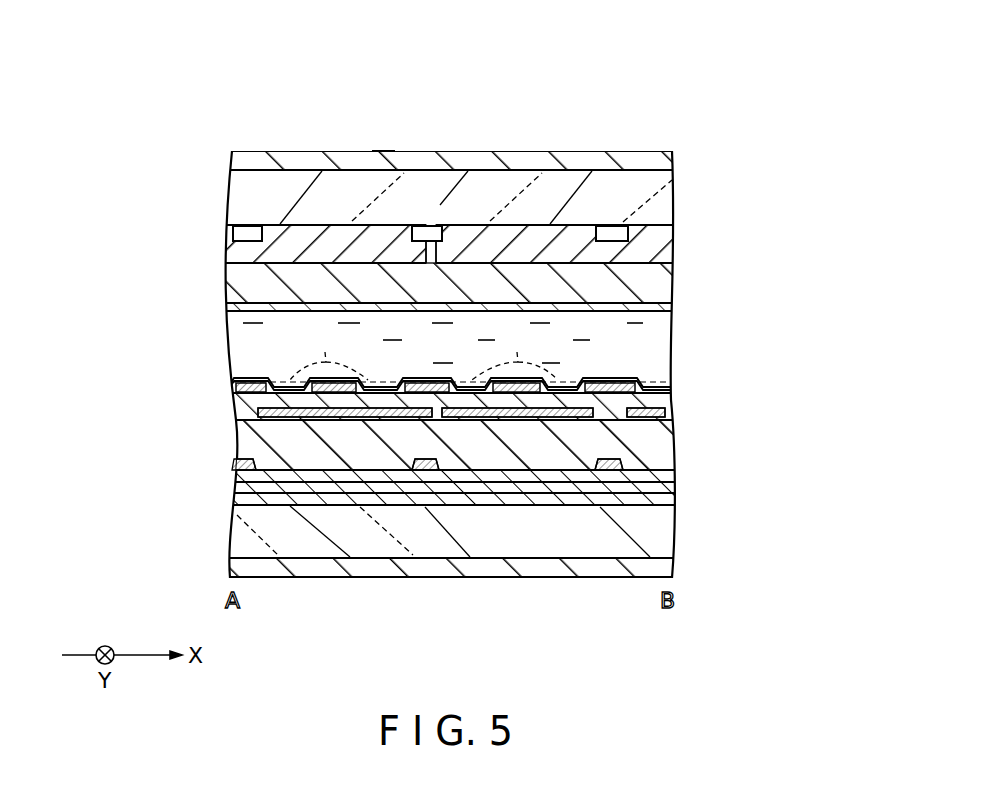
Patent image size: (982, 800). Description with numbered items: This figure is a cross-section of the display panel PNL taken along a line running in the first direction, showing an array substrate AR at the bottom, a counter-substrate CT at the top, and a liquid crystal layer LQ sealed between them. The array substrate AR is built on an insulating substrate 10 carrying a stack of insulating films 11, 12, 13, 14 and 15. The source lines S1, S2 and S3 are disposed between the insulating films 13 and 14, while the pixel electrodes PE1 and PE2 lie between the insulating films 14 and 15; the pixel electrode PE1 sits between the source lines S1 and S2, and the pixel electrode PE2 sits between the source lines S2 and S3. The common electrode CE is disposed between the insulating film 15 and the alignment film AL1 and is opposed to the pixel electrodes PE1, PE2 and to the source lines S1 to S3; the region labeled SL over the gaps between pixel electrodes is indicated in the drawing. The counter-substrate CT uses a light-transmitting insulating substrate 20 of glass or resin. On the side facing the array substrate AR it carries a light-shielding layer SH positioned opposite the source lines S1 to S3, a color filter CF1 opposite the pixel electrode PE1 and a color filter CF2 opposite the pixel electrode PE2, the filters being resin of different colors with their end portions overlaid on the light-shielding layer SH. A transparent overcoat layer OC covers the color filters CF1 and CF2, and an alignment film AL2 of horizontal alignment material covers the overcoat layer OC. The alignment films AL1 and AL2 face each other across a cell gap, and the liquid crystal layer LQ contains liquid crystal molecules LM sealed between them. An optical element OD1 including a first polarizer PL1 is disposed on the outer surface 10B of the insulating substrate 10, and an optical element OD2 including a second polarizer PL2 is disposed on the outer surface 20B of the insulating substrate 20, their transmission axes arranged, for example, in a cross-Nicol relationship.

The display panel PNL is at (673, 130).
The counter-substrate CT is at (517, 211).
The array substrate AR is at (497, 510).
The liquid crystal layer LQ is at (449, 351).
The liquid crystal molecules LM is at (298, 341).
The slit SL is at (424, 352).
The optical element OD2 is at (517, 164).
The second polarizer PL2 is at (674, 160).
The optical element OD1 is at (517, 580).
The first polarizer PL1 is at (665, 571).
The insulating substrate 20 is at (672, 206).
The outer surface 20B is at (384, 160).
The insulating substrate 10 is at (650, 545).
The outer surface 10B is at (368, 566).
The light-shielding layer SH is at (250, 226).
The color filter CF1 is at (324, 248).
The color filter CF2 is at (526, 250).
The overcoat layer OC is at (655, 288).
The alignment film AL2 is at (672, 318).
The alignment film AL1 is at (672, 378).
The insulating film 15 is at (672, 408).
The insulating film 14 is at (250, 440).
The insulating film 13 is at (675, 476).
The insulating film 12 is at (675, 490).
The insulating film 11 is at (675, 505).
The common electrode CE is at (560, 418).
The pixel electrode PE1 is at (332, 394).
The pixel electrode PE2 is at (516, 394).
The source line S1 is at (243, 472).
The source line S2 is at (426, 472).
The source line S3 is at (610, 472).